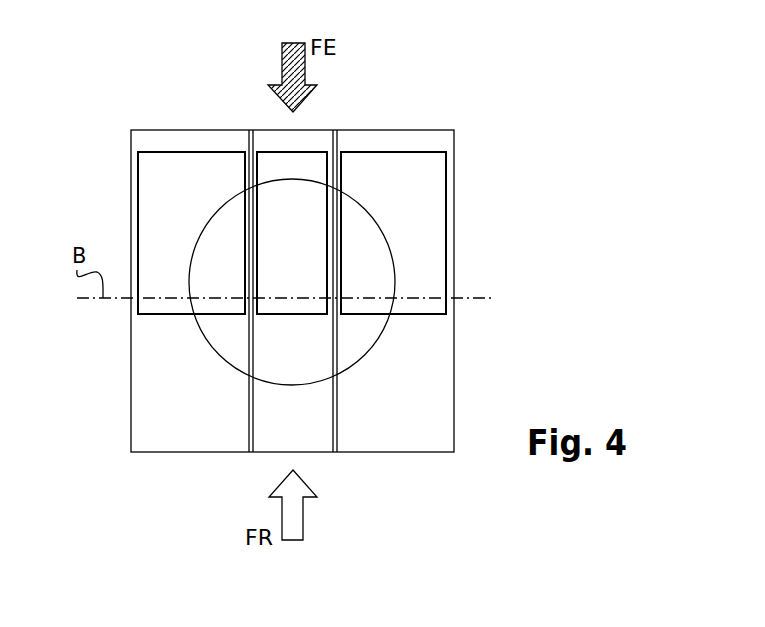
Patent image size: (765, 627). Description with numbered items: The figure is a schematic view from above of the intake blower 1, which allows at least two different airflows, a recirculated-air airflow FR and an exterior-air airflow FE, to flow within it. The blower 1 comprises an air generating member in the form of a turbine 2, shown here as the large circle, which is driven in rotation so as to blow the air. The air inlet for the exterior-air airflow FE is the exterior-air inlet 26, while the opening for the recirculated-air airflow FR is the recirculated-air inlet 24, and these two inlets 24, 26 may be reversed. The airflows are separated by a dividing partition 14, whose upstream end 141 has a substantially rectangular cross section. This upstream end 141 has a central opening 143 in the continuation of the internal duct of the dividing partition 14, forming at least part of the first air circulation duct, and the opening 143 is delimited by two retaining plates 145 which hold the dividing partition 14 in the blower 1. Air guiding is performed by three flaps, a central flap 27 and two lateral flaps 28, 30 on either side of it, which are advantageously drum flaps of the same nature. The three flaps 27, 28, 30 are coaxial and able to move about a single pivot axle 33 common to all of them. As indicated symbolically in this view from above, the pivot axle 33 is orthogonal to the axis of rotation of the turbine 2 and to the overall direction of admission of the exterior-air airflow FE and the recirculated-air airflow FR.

The intake blower 1 is at (466, 108).
The turbine 2 is at (395, 228).
The dividing partition 14 is at (275, 427).
The recirculated-air inlet 24 is at (333, 487).
The exterior-air inlet 26 is at (318, 120).
The central flap 27 is at (257, 165).
The lateral flap 28 is at (206, 152).
The lateral flap 30 is at (377, 160).
The pivot axle 33 is at (470, 299).
The upstream end 141 is at (272, 157).
The opening 143 is at (306, 332).
The retaining plates 145 is at (252, 424).